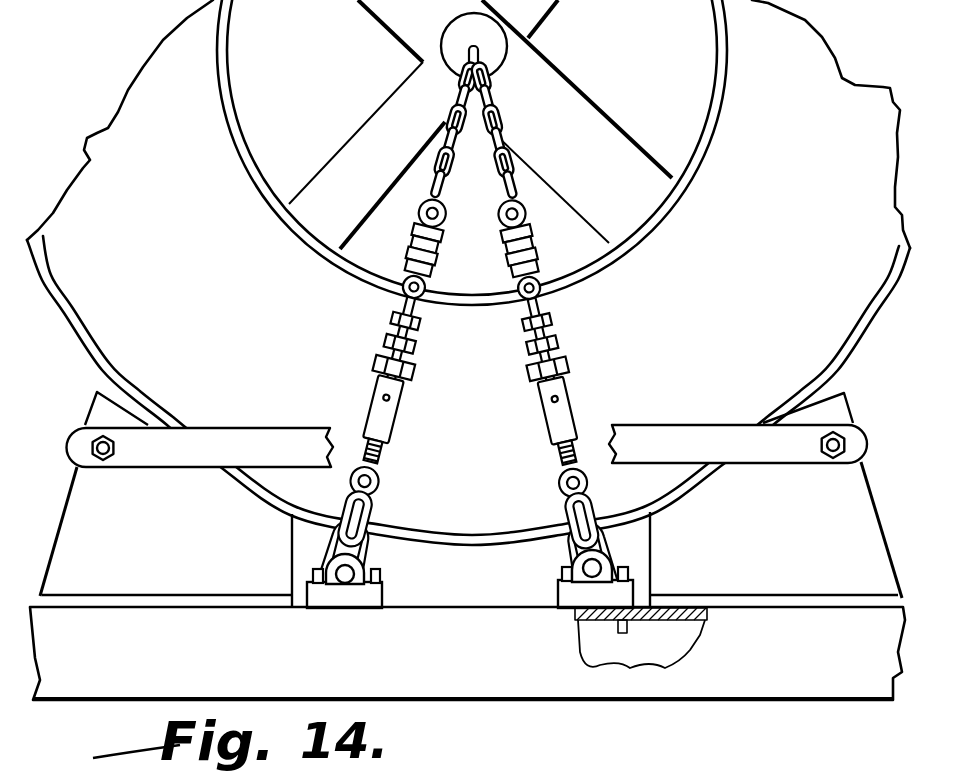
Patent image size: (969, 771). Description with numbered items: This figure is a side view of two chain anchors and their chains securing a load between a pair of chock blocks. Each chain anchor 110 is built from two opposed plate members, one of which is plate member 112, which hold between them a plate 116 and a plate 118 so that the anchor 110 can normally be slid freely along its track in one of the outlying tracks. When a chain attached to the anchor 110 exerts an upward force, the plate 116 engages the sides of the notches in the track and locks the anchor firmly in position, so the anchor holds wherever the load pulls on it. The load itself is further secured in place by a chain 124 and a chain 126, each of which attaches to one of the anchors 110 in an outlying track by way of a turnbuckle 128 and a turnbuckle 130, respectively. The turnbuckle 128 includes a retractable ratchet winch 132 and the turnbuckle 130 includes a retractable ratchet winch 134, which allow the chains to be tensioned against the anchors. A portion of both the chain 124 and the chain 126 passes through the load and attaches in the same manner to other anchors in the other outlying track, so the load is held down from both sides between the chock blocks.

The chain anchor 110 is at (280, 580).
The plate member 112 is at (340, 598).
The plate 116 is at (382, 576).
The plate 118 is at (318, 568).
The chain 124 is at (503, 127).
The chain 126 is at (437, 133).
The turnbuckle 128 is at (370, 342).
The turnbuckle 130 is at (578, 332).
The retractable ratchet winch 132 is at (384, 408).
The retractable ratchet winch 134 is at (565, 409).